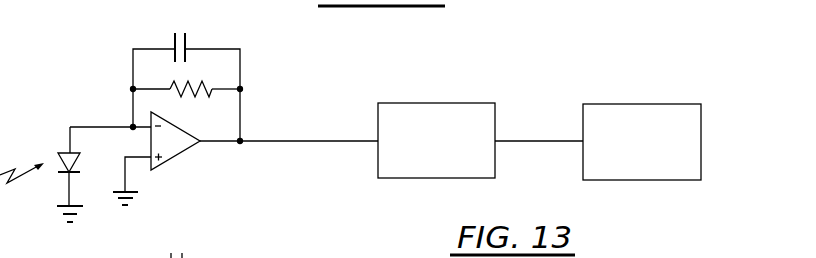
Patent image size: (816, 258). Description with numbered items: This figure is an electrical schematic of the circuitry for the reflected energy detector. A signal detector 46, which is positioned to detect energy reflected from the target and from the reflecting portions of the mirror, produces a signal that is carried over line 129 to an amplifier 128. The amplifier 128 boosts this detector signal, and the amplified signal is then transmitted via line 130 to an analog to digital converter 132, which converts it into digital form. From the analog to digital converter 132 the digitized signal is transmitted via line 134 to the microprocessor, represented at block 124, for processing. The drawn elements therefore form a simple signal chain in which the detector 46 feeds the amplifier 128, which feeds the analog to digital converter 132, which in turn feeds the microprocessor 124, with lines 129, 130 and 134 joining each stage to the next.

The signal detector 46 is at (58, 152).
The microprocessor 124 is at (647, 104).
The amplifier 128 is at (147, 29).
The line 129 is at (115, 126).
The line 130 is at (288, 140).
The analog to digital converter 132 is at (422, 103).
The line 134 is at (527, 140).